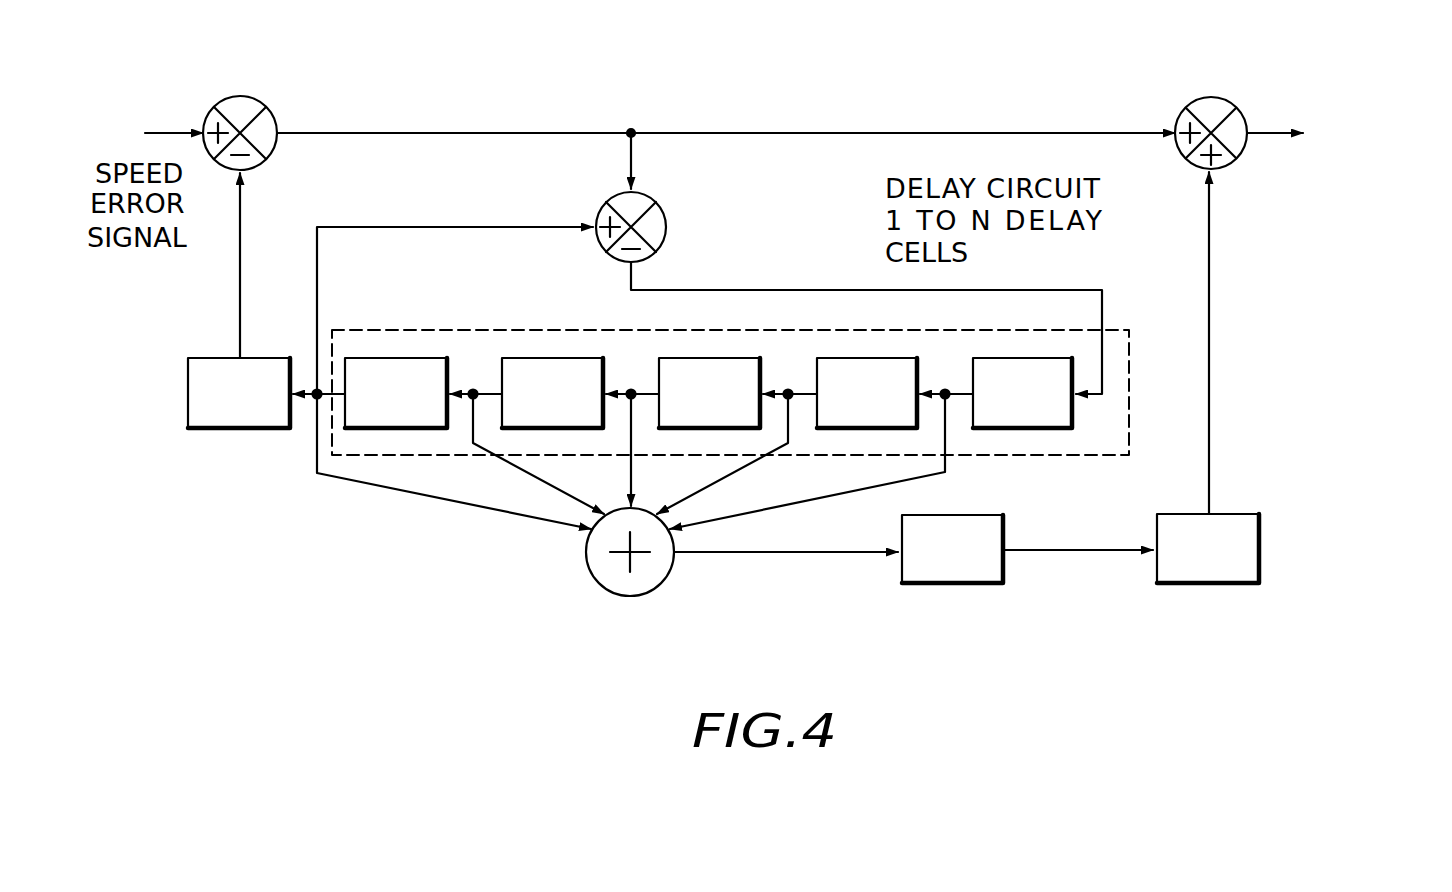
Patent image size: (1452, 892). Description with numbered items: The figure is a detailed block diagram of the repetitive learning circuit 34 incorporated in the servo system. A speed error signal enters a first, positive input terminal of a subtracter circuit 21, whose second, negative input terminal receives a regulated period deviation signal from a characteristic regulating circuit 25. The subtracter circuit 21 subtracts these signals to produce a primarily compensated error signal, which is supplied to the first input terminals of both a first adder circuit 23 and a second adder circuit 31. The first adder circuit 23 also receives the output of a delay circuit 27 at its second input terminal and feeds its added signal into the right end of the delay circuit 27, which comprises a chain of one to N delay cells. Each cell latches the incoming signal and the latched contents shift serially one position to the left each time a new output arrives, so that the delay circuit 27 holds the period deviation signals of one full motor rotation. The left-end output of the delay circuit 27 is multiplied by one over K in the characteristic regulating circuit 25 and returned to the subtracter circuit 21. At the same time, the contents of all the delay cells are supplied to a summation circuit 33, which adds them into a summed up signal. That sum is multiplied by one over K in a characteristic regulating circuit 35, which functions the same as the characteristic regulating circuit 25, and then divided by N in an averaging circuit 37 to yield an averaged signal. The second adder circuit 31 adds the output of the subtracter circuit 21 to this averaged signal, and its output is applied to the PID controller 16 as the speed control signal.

The PID controller 16 is at (1341, 194).
The subtracter circuit 21 is at (275, 117).
The first adder circuit 23 is at (667, 217).
The characteristic regulating circuit 25 is at (193, 428).
The delay circuit 27 is at (730, 330).
The second adder circuit 31 is at (1187, 108).
The summation circuit 33 is at (592, 575).
The repetitive learning circuit 34 is at (568, 82).
The characteristic regulating circuit 35 is at (1005, 575).
The averaging circuit 37 is at (1259, 577).